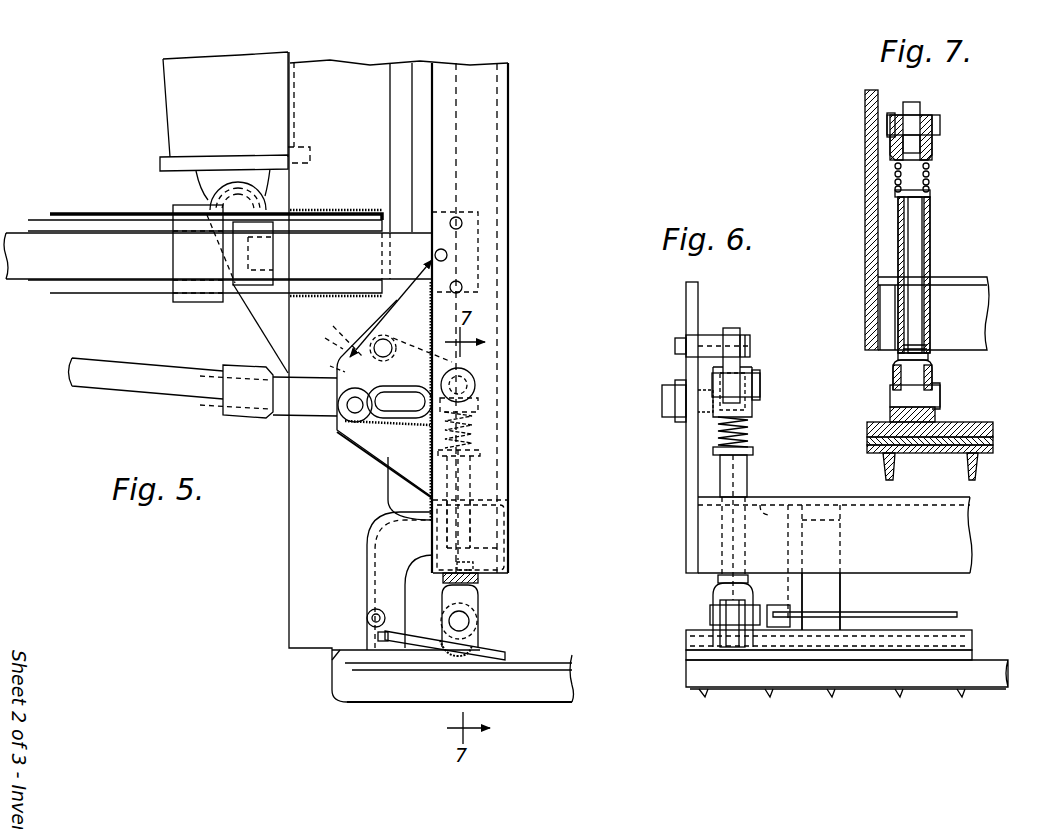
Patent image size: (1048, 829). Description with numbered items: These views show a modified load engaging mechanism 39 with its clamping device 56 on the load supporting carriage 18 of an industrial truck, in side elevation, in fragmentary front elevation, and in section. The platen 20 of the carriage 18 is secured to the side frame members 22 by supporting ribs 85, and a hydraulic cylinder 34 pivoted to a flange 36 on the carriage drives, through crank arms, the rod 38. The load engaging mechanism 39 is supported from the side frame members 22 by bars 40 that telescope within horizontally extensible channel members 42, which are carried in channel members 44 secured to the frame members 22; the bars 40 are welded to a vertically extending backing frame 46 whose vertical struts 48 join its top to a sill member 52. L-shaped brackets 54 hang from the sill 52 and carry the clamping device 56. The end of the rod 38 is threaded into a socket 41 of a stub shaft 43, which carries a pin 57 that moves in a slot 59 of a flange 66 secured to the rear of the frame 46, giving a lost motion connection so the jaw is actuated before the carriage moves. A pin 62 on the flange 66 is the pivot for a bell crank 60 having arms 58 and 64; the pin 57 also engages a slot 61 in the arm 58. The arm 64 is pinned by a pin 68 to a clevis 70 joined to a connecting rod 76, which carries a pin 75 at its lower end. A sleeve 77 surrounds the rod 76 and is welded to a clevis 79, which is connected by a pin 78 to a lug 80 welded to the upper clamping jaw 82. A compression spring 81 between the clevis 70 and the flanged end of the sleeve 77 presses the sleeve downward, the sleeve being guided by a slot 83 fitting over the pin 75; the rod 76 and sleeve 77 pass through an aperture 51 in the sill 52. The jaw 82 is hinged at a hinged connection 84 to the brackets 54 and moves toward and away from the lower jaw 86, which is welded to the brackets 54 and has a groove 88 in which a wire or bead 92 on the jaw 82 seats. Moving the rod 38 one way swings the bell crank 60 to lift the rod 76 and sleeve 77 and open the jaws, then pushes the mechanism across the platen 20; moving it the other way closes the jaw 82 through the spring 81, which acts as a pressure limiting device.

In FIG. 5, the load supporting carriage 18 is at (252, 578).
In FIG. 5, the platen 20 is at (560, 668).
In FIG. 6, the platen 20 is at (985, 675).
In FIG. 7, the platen 20 is at (872, 462).
In FIG. 5, the side frame members 22 is at (343, 78).
In FIG. 5, the hydraulic cylinder 34 is at (175, 88).
In FIG. 5, the flange 36 is at (262, 320).
In FIG. 5, the rod 38 is at (118, 370).
In FIG. 5, the load engaging mechanism 39 is at (557, 513).
In FIG. 6, the load engaging mechanism 39 is at (672, 580).
In FIG. 5, the bars 40 is at (218, 256).
In FIG. 5, the socket 41 is at (222, 366).
In FIG. 5, the channel members 42 is at (345, 222).
In FIG. 5, the stub shaft 43 is at (310, 392).
In FIG. 6, the stub shaft 43 is at (670, 420).
In FIG. 5, the channel members 44 is at (300, 212).
In FIG. 5, the backing frame 46 is at (510, 120).
In FIG. 6, the backing frame 46 is at (686, 300).
In FIG. 7, the backing frame 46 is at (865, 210).
In FIG. 5, the vertical struts 48 is at (505, 195).
In FIG. 6, the aperture 51 is at (762, 505).
In FIG. 7, the aperture 51 is at (930, 277).
In FIG. 5, the sill member 52 is at (510, 512).
In FIG. 6, the sill member 52 is at (966, 530).
In FIG. 7, the sill member 52 is at (975, 280).
In FIG. 5, the L-shaped brackets 54 is at (365, 571).
In FIG. 6, the L-shaped brackets 54 is at (842, 590).
In FIG. 5, the clamping device 56 is at (518, 655).
In FIG. 6, the clamping device 56 is at (668, 640).
In FIG. 5, the pin 57 is at (345, 423).
In FIG. 6, the pin 57 is at (662, 405).
In FIG. 5, the arm 58 is at (336, 331).
In FIG. 5, the slot 59 is at (395, 416).
In FIG. 5, the bell crank 60 is at (321, 338).
In FIG. 5, the slot 61 is at (324, 359).
In FIG. 5, the pin 62 is at (380, 346).
In FIG. 6, the pin 62 is at (752, 346).
In FIG. 5, the arm 64 is at (415, 337).
In FIG. 6, the arm 64 is at (738, 333).
In FIG. 7, the arm 64 is at (912, 108).
In FIG. 5, the flange 66 is at (397, 460).
In FIG. 5, the pin 68 is at (464, 385).
In FIG. 6, the pin 68 is at (762, 385).
In FIG. 7, the pin 68 is at (930, 126).
In FIG. 5, the clevis 70 is at (470, 405).
In FIG. 6, the clevis 70 is at (754, 412).
In FIG. 7, the clevis 70 is at (932, 152).
In FIG. 5, the pin 75 is at (480, 590).
In FIG. 6, the pin 75 is at (718, 578).
In FIG. 7, the pin 75 is at (898, 356).
In FIG. 5, the connecting rod 76 is at (462, 470).
In FIG. 6, the connecting rod 76 is at (755, 450).
In FIG. 7, the connecting rod 76 is at (915, 234).
In FIG. 5, the sleeve 77 is at (510, 548).
In FIG. 6, the sleeve 77 is at (740, 472).
In FIG. 7, the sleeve 77 is at (928, 217).
In FIG. 5, the pin 78 is at (470, 616).
In FIG. 6, the pin 78 is at (710, 618).
In FIG. 7, the pin 78 is at (942, 397).
In FIG. 5, the clevis 79 is at (480, 600).
In FIG. 6, the clevis 79 is at (713, 592).
In FIG. 7, the clevis 79 is at (935, 374).
In FIG. 5, the lug 80 is at (472, 640).
In FIG. 6, the lug 80 is at (720, 613).
In FIG. 7, the lug 80 is at (937, 418).
In FIG. 5, the compression spring 81 is at (476, 436).
In FIG. 6, the compression spring 81 is at (750, 432).
In FIG. 7, the compression spring 81 is at (930, 178).
In FIG. 5, the upper clamping jaw 82 is at (385, 636).
In FIG. 6, the upper clamping jaw 82 is at (690, 642).
In FIG. 7, the upper clamping jaw 82 is at (876, 424).
In FIG. 5, the slot 83 is at (476, 567).
In FIG. 7, the slot 83 is at (912, 348).
In FIG. 5, the hinged connection 84 is at (366, 618).
In FIG. 6, the hinged connection 84 is at (950, 612).
In FIG. 5, the supporting ribs 85 is at (545, 695).
In FIG. 6, the supporting ribs 85 is at (962, 692).
In FIG. 5, the lower jaw 86 is at (402, 658).
In FIG. 6, the lower jaw 86 is at (686, 662).
In FIG. 7, the lower jaw 86 is at (993, 450).
In FIG. 5, the groove 88 is at (440, 660).
In FIG. 7, the groove 88 is at (975, 463).
In FIG. 5, the wire or bead 92 is at (450, 650).
In FIG. 7, the wire or bead 92 is at (993, 439).